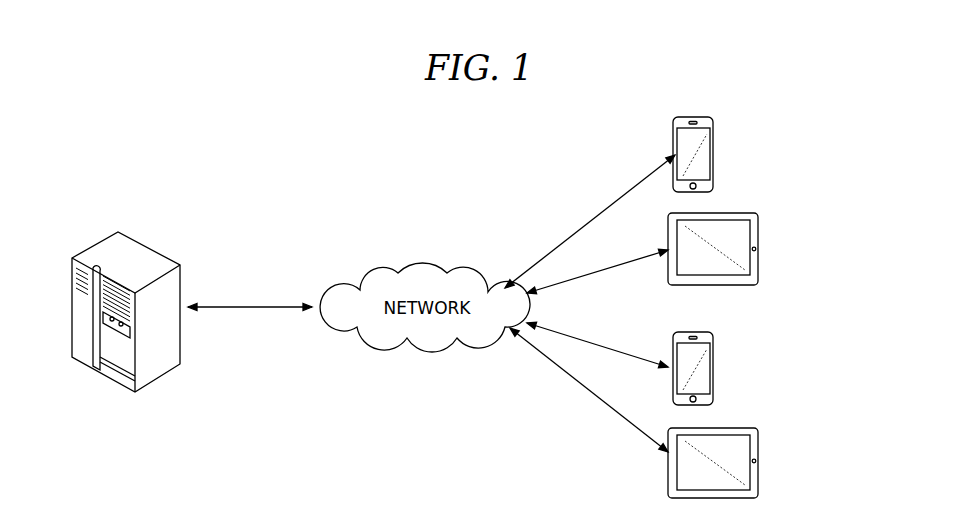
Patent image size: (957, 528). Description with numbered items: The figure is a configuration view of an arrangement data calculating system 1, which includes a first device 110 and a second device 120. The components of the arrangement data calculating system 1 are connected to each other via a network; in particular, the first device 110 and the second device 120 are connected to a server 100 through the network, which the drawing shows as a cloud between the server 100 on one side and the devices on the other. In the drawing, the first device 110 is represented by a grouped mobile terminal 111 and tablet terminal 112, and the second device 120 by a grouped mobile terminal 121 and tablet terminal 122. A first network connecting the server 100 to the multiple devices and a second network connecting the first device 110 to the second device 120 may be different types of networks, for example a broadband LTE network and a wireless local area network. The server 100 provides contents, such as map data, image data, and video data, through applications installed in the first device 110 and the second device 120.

The arrangement data calculating system 1 is at (435, 139).
The server 100 is at (150, 247).
The first device 110 is at (825, 285).
The first mobile terminal 111 is at (713, 155).
The first tablet terminal 112 is at (758, 249).
The second device 120 is at (825, 502).
The second mobile terminal 121 is at (713, 370).
The second tablet terminal 122 is at (758, 461).